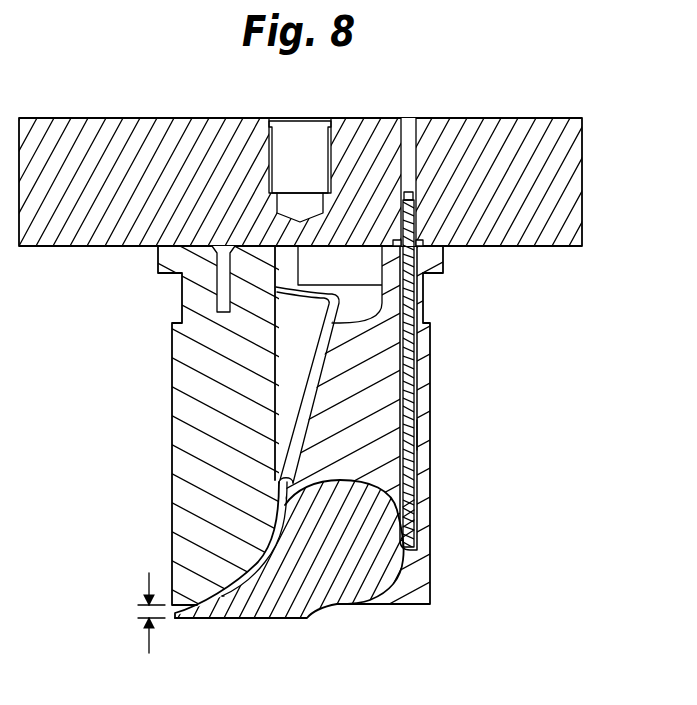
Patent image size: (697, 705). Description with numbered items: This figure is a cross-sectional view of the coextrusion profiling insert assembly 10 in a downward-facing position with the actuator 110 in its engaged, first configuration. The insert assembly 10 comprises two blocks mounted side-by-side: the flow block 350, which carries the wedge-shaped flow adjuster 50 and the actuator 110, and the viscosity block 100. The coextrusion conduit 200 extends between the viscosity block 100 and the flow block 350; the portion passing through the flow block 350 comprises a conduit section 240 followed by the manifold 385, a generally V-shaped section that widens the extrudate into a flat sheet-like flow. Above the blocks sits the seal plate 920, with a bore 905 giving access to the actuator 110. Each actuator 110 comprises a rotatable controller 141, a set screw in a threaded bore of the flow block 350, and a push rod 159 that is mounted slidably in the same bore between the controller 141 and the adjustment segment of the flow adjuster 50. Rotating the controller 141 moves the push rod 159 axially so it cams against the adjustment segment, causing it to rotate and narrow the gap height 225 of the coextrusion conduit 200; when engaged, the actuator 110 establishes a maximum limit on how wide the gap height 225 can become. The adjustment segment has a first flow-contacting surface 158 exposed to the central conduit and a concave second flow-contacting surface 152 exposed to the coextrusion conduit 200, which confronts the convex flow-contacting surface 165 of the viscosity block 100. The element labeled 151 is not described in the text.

The coextrusion profiling insert assembly 10 is at (403, 672).
The seal plate 920 is at (560, 167).
The bore in seal plate 905 is at (409, 128).
The viscosity block 100 is at (172, 425).
The conduit section 240 is at (345, 262).
The manifold 385 is at (287, 356).
The actuator 110 is at (407, 358).
The rotatable controller 141 is at (417, 222).
The push rod 159 is at (418, 432).
The pin tip 151 is at (402, 488).
The flow block 350 is at (412, 577).
The wedge-shaped flow adjuster 50 is at (297, 600).
The coextrusion conduit 200 is at (256, 574).
The convex flow-contacting surface 165 is at (276, 535).
The second flow-contacting surface 152 is at (224, 596).
The first flow-contacting surface 158 is at (203, 618).
The gap height 225 is at (148, 625).